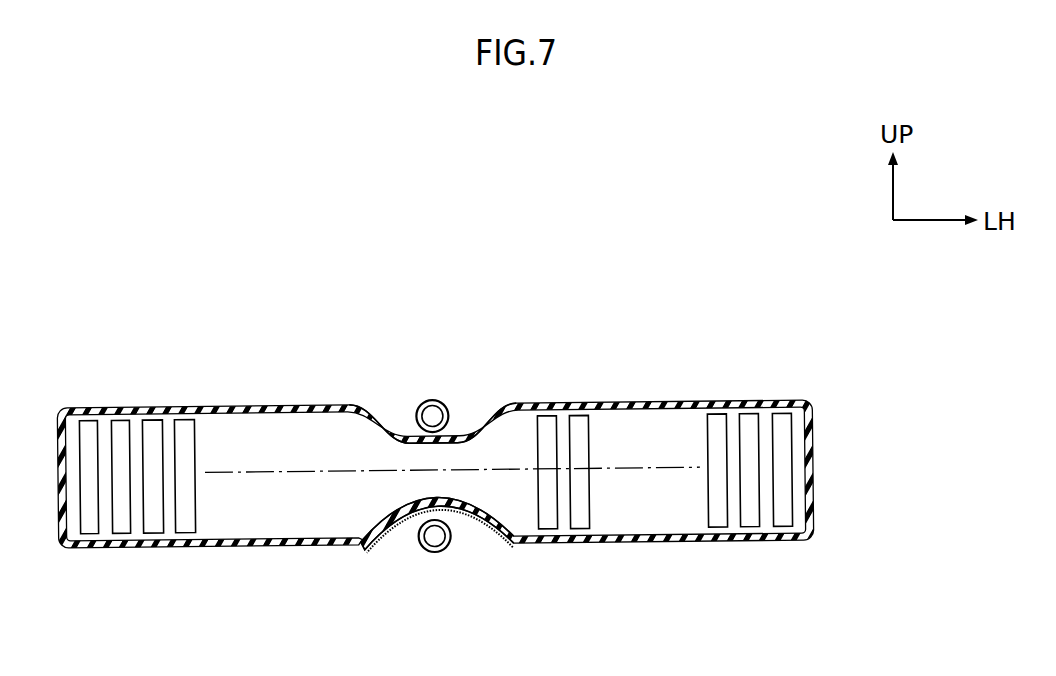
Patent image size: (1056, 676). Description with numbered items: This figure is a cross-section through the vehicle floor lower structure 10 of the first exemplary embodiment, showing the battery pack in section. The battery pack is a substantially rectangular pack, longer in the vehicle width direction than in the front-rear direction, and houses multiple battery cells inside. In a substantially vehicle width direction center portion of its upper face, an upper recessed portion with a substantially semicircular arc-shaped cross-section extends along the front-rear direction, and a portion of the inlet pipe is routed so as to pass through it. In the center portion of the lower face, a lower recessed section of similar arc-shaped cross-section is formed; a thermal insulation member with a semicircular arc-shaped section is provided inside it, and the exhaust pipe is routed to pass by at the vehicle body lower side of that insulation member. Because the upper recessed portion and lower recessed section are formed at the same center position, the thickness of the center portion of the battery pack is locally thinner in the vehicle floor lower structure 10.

The vehicle floor lower structure 10 is at (597, 328).